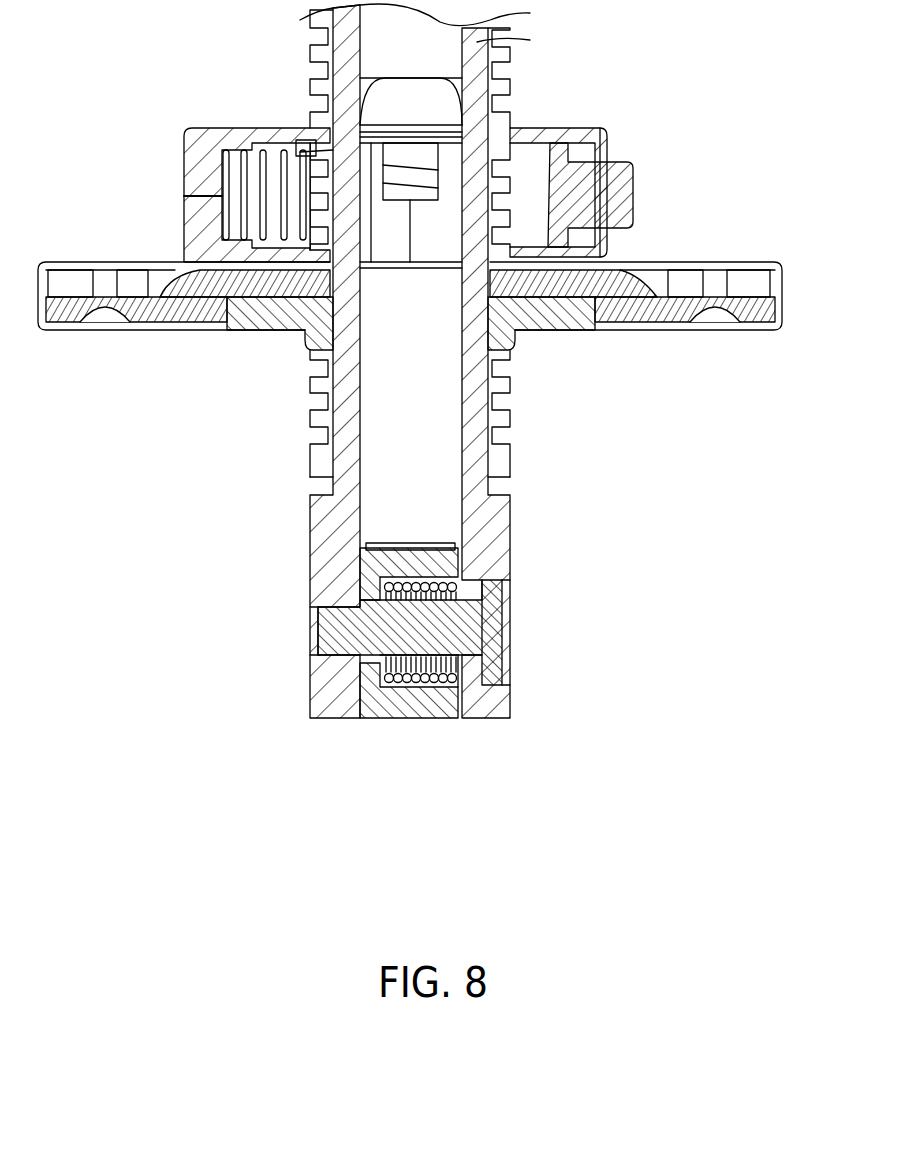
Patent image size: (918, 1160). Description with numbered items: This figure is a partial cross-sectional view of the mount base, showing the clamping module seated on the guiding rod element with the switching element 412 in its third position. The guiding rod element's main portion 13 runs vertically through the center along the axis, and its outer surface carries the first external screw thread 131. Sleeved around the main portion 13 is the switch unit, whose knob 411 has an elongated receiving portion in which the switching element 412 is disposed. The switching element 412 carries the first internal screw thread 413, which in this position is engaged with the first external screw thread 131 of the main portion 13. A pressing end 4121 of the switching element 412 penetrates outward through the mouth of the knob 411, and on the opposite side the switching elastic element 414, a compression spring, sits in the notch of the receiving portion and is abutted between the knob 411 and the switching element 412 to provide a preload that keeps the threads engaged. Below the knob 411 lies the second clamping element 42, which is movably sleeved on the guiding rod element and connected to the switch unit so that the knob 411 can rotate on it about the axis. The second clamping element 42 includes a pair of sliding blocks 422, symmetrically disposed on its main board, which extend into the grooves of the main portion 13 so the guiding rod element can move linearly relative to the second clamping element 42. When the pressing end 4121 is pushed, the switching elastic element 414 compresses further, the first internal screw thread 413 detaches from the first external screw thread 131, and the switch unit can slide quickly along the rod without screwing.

The main portion 13 is at (482, 38).
The first external screw thread 131 is at (505, 85).
The knob 411 is at (190, 220).
The switching element 412 is at (622, 188).
The pressing end 4121 is at (618, 187).
The first internal screw thread 413 is at (308, 152).
The switching elastic element 414 is at (235, 175).
The second clamping element 42 is at (410, 328).
The sliding blocks 422 is at (253, 332).